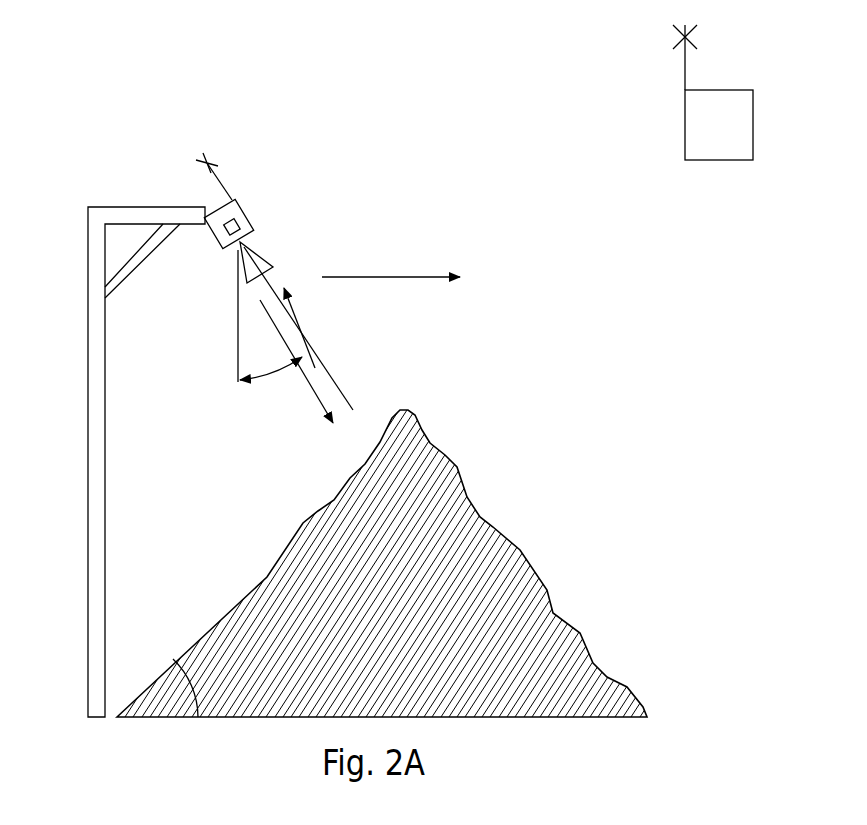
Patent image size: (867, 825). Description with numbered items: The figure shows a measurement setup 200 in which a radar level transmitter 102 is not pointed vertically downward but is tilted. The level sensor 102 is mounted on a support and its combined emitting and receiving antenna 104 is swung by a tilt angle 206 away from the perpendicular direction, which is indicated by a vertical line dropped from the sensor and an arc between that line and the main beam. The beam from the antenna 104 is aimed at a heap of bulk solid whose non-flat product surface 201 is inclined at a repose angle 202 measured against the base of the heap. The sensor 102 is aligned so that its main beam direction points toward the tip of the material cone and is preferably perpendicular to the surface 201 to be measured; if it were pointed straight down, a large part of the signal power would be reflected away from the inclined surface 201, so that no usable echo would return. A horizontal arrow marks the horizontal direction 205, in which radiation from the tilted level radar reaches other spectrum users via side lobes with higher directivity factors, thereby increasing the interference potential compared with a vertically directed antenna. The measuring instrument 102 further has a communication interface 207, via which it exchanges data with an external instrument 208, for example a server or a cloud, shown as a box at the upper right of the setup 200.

The radar level transmitter 102 is at (238, 184).
The combined emitting and receiving antenna 104 is at (272, 250).
The measurement setup 200 is at (568, 303).
The non-flat product surface 201 is at (253, 575).
The repose angle 202 is at (216, 626).
The horizontal direction 205 is at (427, 262).
The tilt angle 206 is at (263, 330).
The communication interface 207 is at (222, 198).
The external instrument 208 is at (698, 133).